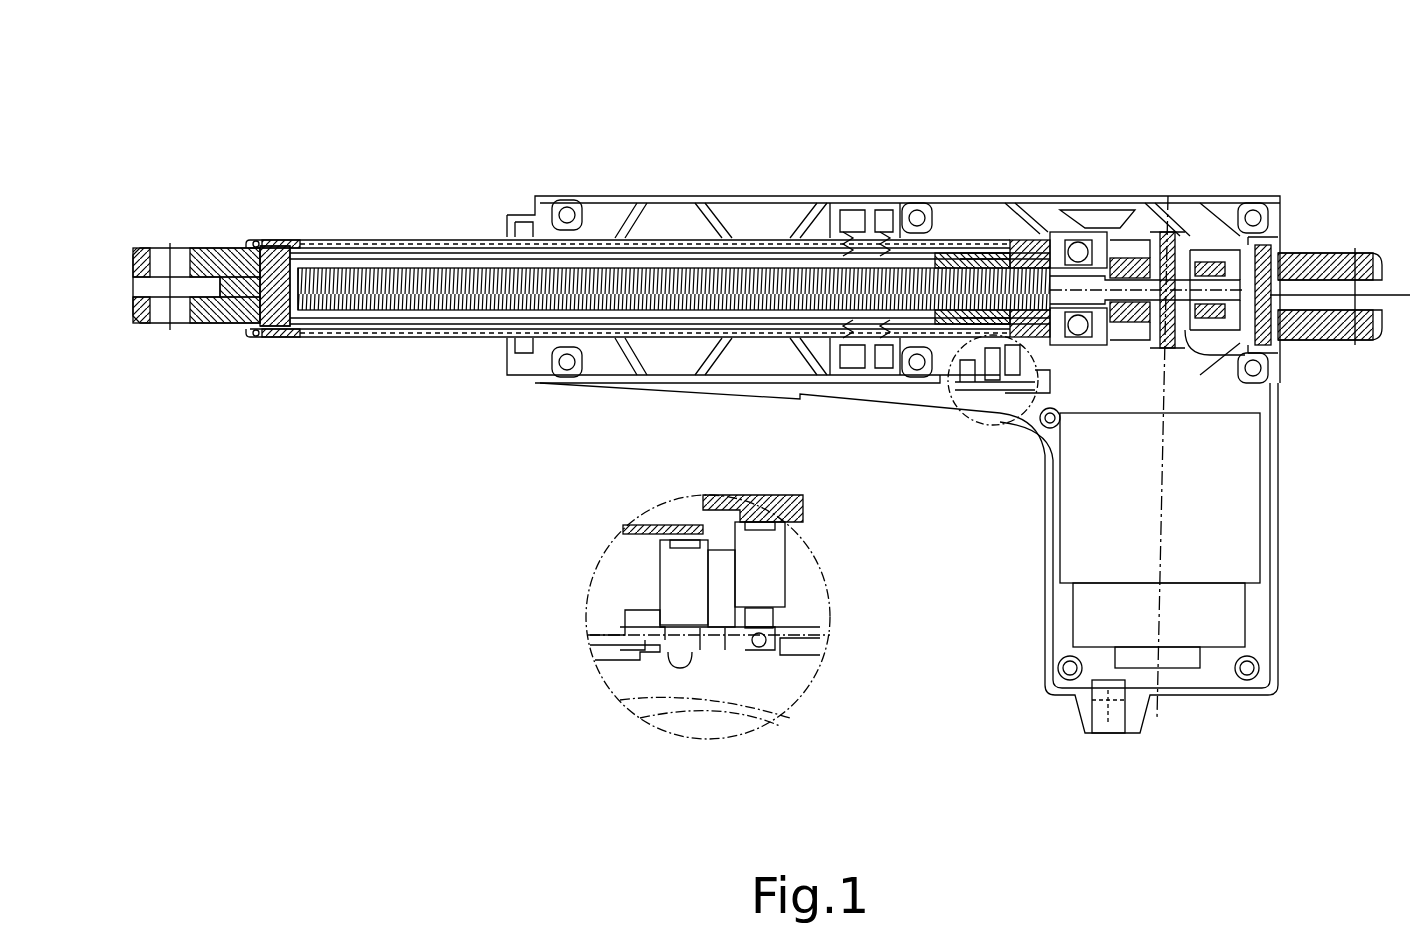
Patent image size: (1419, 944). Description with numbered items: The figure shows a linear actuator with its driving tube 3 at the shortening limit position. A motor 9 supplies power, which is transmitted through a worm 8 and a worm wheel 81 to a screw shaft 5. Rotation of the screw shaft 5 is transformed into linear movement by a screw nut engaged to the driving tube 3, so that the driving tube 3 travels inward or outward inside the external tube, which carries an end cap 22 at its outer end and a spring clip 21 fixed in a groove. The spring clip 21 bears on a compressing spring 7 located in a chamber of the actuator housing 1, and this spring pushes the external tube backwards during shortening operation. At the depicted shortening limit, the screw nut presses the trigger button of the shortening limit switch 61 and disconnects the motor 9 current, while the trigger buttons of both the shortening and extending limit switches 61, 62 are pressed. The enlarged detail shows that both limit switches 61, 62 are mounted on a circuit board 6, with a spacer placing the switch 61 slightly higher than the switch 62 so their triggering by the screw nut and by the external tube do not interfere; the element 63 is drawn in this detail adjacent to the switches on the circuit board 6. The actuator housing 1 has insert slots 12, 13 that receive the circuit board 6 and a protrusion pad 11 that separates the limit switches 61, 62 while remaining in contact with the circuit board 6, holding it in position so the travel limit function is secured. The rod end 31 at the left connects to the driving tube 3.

The actuator housing 1 is at (677, 196).
The driving tube 3 is at (403, 252).
The screw shaft 5 is at (500, 300).
The circuit board 6 is at (722, 640).
The compressing spring 7 is at (850, 240).
The worm 8 is at (1180, 250).
The motor 9 is at (1213, 552).
The protrusion pad 11 is at (720, 590).
The insert slot 12 is at (800, 648).
The insert slot 13 is at (637, 650).
The spring clip 21 is at (893, 240).
The end cap 22 is at (265, 238).
The rod end 31 is at (290, 340).
The shortening limit switch 61 is at (758, 583).
The extending limit switch 62 is at (690, 585).
The switch contact 63 is at (757, 615).
The worm wheel 81 is at (1160, 240).